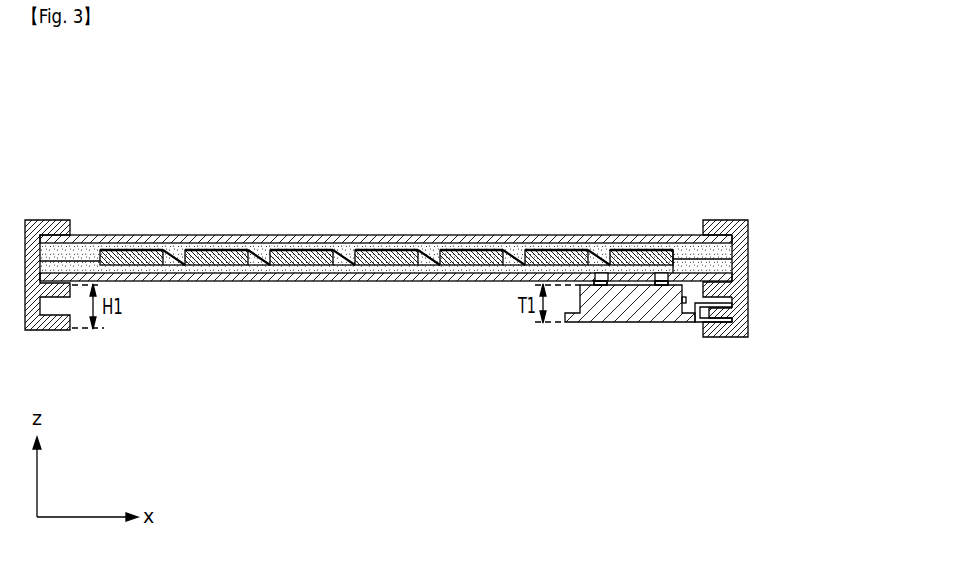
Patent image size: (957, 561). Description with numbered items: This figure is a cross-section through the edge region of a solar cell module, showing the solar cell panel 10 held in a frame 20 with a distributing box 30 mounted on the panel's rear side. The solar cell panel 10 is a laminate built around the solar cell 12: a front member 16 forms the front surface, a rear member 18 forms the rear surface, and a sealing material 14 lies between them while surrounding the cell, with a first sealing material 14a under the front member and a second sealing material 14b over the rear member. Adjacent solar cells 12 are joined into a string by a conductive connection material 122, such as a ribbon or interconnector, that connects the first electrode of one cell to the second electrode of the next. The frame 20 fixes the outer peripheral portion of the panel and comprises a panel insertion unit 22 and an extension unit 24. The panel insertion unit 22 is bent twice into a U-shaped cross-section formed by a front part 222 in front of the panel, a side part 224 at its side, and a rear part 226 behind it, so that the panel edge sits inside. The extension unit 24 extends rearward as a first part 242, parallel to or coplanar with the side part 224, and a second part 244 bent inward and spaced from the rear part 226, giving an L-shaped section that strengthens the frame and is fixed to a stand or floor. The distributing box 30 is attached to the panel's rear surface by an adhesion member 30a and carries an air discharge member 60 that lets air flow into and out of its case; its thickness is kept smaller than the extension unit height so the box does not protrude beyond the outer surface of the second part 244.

The solar cell panel 10 is at (590, 129).
The solar cell 12 is at (387, 240).
The conductive connection material 122 is at (292, 240).
The sealing material 14 is at (442, 161).
The first sealing material 14a is at (455, 241).
The second sealing material 14b is at (512, 241).
The front member 16 is at (342, 240).
The rear member 18 is at (578, 241).
The frame 20 is at (862, 245).
The panel insertion unit 22 is at (820, 212).
The front part 222 is at (748, 228).
The side part 224 is at (748, 250).
The rear part 226 is at (748, 290).
The extension unit 24 is at (820, 305).
The first part 242 is at (748, 313).
The second part 244 is at (748, 333).
The distributing box 30 is at (591, 341).
The adhesion member 30a is at (645, 323).
The air discharge member 60 is at (686, 304).